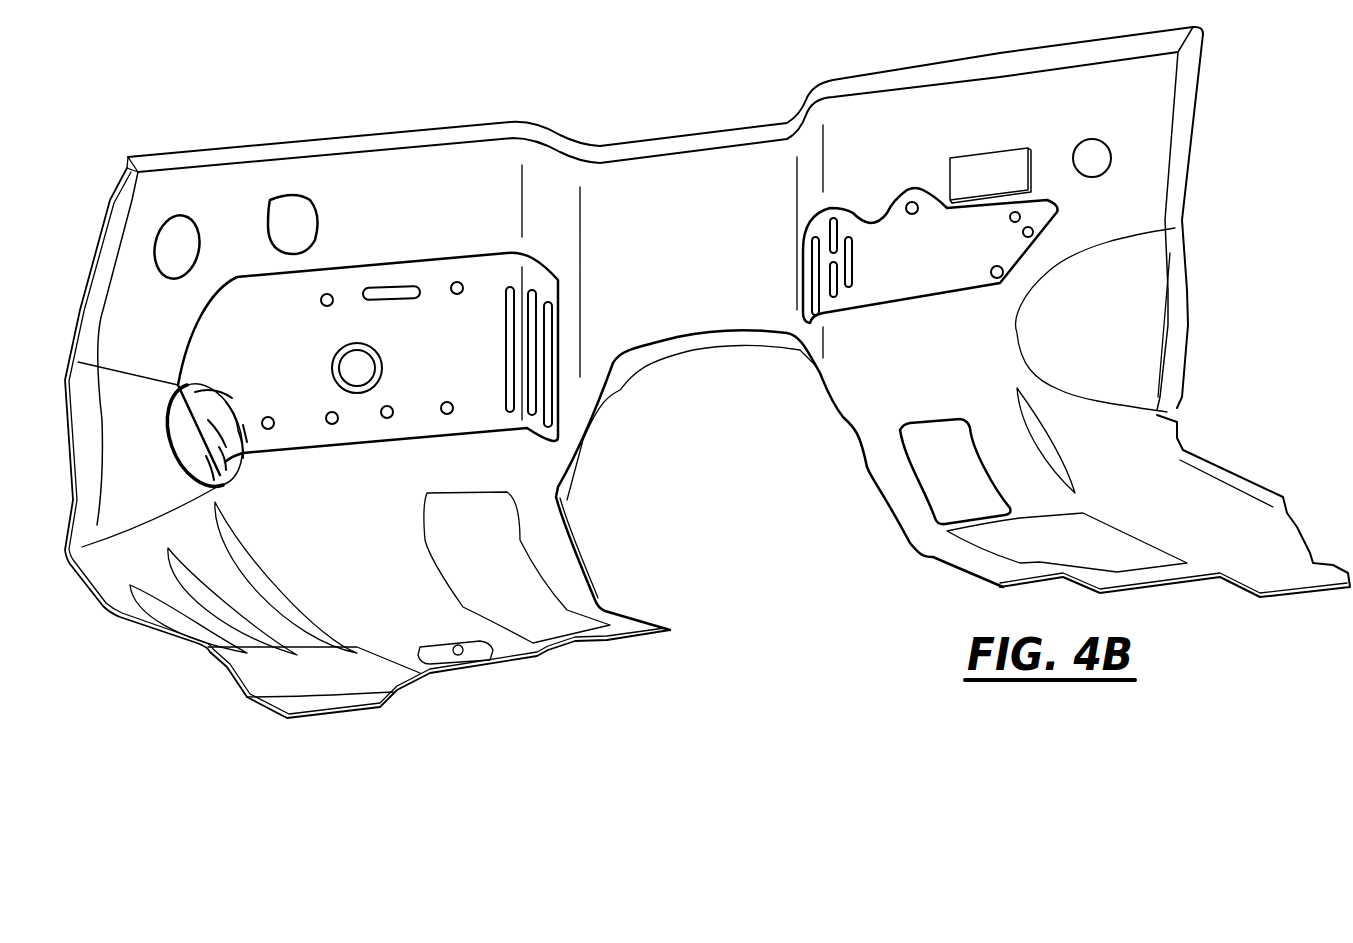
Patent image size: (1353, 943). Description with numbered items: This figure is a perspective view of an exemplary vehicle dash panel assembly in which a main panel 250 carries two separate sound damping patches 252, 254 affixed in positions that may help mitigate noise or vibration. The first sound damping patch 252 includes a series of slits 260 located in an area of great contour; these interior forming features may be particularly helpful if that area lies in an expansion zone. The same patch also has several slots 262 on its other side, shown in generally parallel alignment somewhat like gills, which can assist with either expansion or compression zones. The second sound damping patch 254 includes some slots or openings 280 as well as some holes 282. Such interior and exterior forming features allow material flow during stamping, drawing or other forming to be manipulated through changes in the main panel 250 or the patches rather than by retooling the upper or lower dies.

The main panel 250 is at (410, 173).
The sound damping patch 252 is at (258, 292).
The sound damping patch 254 is at (890, 213).
The slits 260 is at (208, 457).
The slots 262 is at (547, 343).
The slots or openings 280 is at (810, 303).
The holes 282 is at (1033, 230).